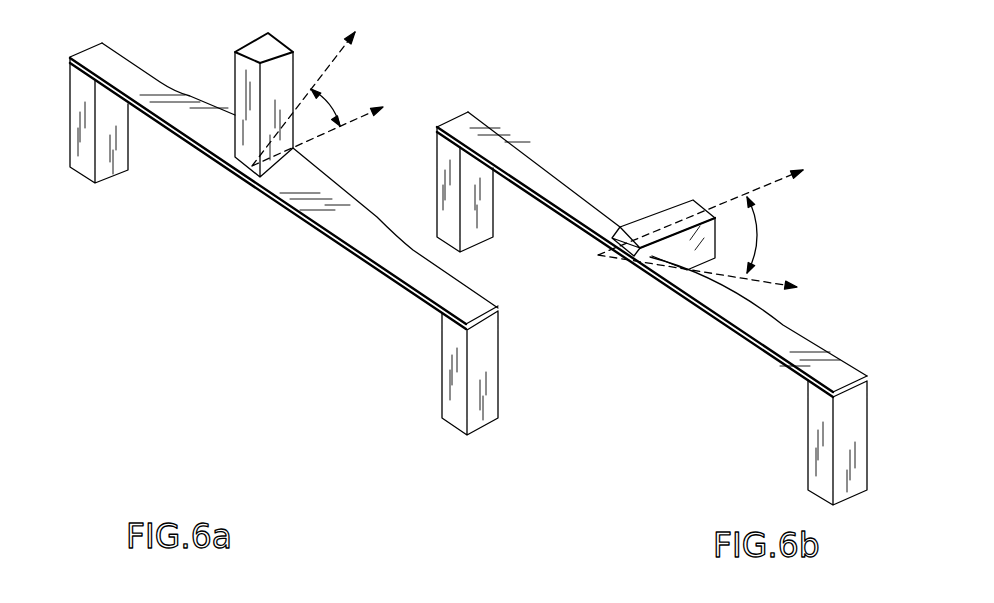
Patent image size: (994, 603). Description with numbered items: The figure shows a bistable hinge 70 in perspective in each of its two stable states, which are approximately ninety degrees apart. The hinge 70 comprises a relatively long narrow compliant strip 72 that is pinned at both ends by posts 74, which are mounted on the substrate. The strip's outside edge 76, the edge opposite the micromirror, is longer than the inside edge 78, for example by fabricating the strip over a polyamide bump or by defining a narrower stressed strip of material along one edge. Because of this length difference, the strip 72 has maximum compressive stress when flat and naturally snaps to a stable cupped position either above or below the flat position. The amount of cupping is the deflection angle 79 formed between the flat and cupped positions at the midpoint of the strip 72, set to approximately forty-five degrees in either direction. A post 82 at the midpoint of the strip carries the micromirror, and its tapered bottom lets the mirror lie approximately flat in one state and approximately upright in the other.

In FIG. 6A, the hinge 70 is at (286, 233).
In FIG. 6B, the hinge 70 is at (652, 308).
In FIG. 6A, the compliant strip 72 is at (381, 253).
In FIG. 6B, the compliant strip 72 is at (771, 341).
In FIG. 6A, the posts 74 is at (68, 103).
In FIG. 6B, the posts 74 is at (488, 218).
In FIG. 6A, the outside edge 76 is at (337, 180).
In FIG. 6B, the outside edge 76 is at (580, 173).
In FIG. 6A, the inside edge 78 is at (312, 232).
In FIG. 6B, the inside edge 78 is at (680, 302).
In FIG. 6A, the deflection angle 79 is at (331, 100).
In FIG. 6B, the deflection angle 79 is at (760, 232).
In FIG. 6A, the post 82 is at (243, 70).
In FIG. 6B, the post 82 is at (690, 238).